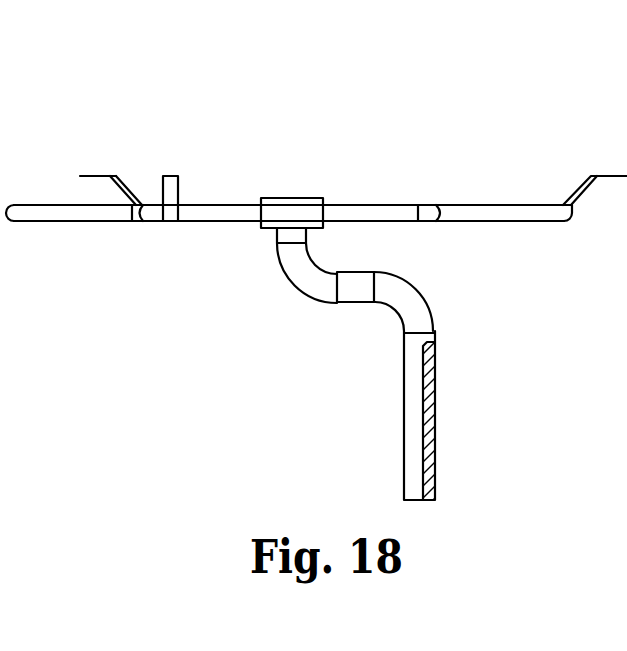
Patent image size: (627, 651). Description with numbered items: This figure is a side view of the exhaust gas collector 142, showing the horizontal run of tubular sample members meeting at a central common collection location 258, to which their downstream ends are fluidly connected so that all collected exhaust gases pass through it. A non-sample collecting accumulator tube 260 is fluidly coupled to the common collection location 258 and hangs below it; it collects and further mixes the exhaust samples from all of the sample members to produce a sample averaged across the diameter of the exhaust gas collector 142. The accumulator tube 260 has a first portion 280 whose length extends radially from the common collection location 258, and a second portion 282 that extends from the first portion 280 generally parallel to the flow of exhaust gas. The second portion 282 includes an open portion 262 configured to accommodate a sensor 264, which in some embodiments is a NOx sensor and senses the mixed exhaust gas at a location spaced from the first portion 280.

The exhaust gas collector 142 is at (278, 108).
The common collection location 258 is at (298, 198).
The non-sample collecting accumulator tube 260 is at (345, 327).
The first portion 280 is at (340, 268).
The second portion 282 is at (401, 332).
The open portion 262 is at (410, 410).
The sensor 264 is at (435, 415).